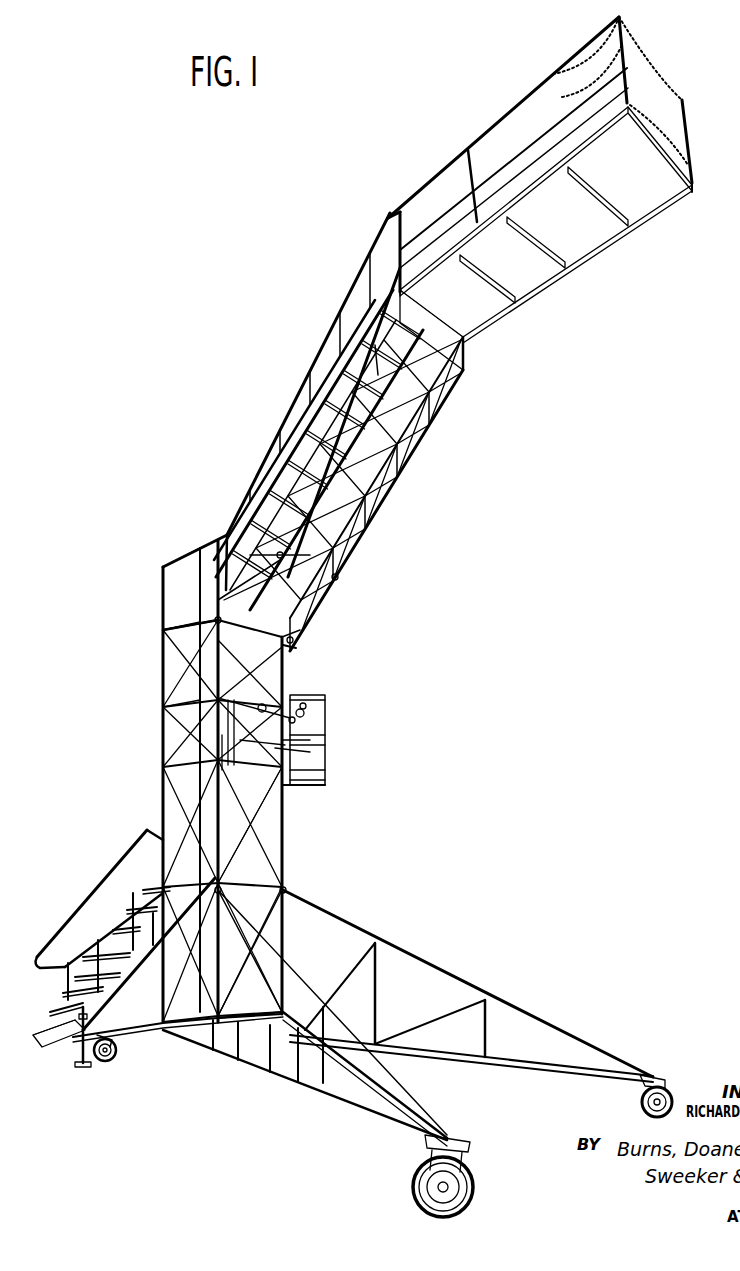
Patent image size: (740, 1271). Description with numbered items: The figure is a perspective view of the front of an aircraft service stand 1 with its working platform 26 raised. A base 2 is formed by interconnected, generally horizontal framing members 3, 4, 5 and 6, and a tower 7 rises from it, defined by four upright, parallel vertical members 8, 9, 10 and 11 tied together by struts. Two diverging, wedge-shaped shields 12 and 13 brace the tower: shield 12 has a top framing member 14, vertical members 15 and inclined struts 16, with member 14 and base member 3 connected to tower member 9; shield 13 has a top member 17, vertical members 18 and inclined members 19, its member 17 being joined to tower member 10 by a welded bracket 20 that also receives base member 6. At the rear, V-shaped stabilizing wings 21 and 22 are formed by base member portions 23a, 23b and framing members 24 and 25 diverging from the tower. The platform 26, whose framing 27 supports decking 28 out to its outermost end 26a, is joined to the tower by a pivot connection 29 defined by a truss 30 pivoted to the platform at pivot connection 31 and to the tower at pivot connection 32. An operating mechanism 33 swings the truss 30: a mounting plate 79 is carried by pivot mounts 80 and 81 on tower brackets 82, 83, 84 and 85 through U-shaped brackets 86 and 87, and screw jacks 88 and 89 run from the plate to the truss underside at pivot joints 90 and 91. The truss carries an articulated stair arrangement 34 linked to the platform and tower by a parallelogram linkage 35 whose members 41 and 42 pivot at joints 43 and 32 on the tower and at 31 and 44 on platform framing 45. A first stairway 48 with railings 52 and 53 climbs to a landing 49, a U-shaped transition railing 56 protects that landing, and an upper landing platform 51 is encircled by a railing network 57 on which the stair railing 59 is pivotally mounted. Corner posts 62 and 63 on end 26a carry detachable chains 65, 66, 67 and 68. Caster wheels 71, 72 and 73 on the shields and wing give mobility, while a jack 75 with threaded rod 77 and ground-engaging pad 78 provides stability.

The stand 1 is at (418, 540).
The base 2 is at (492, 1085).
The framing member 3 is at (347, 1107).
The framing member 4 is at (363, 1073).
The framing member 5 is at (427, 1067).
The framing member 6 is at (423, 1040).
The tower 7 is at (290, 856).
The vertical member 8 is at (162, 760).
The vertical member 9 is at (225, 680).
The vertical member 10 is at (287, 822).
The vertical member 11 is at (228, 838).
The shield 12 is at (313, 977).
The shield 13 is at (398, 942).
The top framing member 14 is at (327, 1010).
The vertical members 15 is at (260, 1037).
The inclined struts 16 is at (225, 1035).
The top member 17 is at (460, 977).
The vertical members 18 is at (375, 993).
The inclined members 19 is at (357, 950).
The welded bracket 20 is at (285, 889).
The stabilizing wing 21 is at (117, 1018).
The stabilizing wing 22 is at (233, 975).
The base member portion 23a is at (152, 1030).
The base member portion 23b is at (250, 1008).
The framing member 24 is at (128, 990).
The framing member 25 is at (236, 950).
The working platform 26 is at (617, 243).
The outermost end 26a is at (694, 186).
The framing 27 is at (573, 267).
The decking 28 is at (523, 273).
The pivot connection 29 is at (412, 455).
The truss 30 is at (384, 497).
The pivot connection 31 is at (465, 340).
The pivot connection 32 is at (300, 640).
The operating mechanism 33 is at (330, 612).
The articulated stair arrangement 34 is at (372, 347).
The parallelogram linkage 35 is at (358, 313).
The parallelogram member 41 is at (298, 447).
The parallelogram member 42 is at (340, 393).
The pivot joint 43 is at (227, 585).
The pivot joint 44 is at (397, 258).
The framing 45 is at (412, 237).
The first stairway 48 is at (101, 853).
The landing 49 is at (322, 782).
The landing platform 51 is at (178, 632).
The railing 52 is at (78, 900).
The railing 53 is at (152, 847).
The transition railing 56 is at (326, 728).
The railing network 57 is at (165, 567).
The railing 59 is at (283, 425).
The corner post 62 is at (629, 93).
The corner post 63 is at (690, 135).
The chain 65 is at (598, 55).
The chain 66 is at (565, 97).
The chain 67 is at (652, 72).
The chain 68 is at (675, 117).
The caster wheel 71 is at (472, 1175).
The caster wheel 72 is at (664, 1088).
The caster wheel 73 is at (113, 1063).
The jack 75 is at (70, 1063).
The threaded rod 77 is at (96, 1062).
The ground-engaging pad 78 is at (84, 1068).
The mounting plate 79 is at (296, 720).
The pivot mount 80 is at (314, 700).
The pivot mount 81 is at (240, 697).
The tower bracket 82 is at (285, 740).
The tower bracket 83 is at (278, 748).
The tower bracket 84 is at (234, 730).
The tower bracket 85 is at (222, 742).
The U-shaped bracket 86 is at (305, 706).
The U-shaped mounting bracket 87 is at (256, 704).
The screw jack 88 is at (265, 588).
The screw jack 89 is at (312, 650).
The pivot joint 90 is at (283, 556).
The pivot joint 91 is at (337, 577).